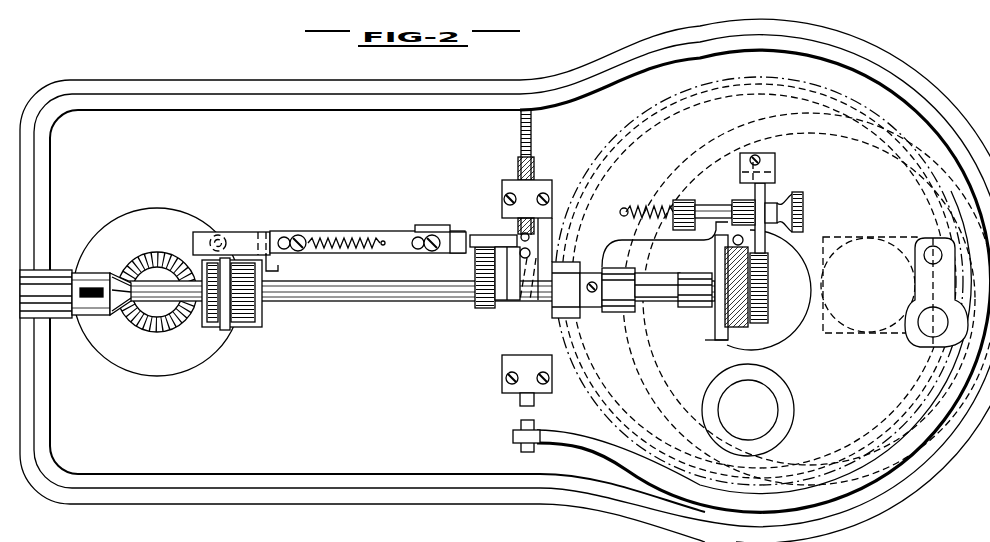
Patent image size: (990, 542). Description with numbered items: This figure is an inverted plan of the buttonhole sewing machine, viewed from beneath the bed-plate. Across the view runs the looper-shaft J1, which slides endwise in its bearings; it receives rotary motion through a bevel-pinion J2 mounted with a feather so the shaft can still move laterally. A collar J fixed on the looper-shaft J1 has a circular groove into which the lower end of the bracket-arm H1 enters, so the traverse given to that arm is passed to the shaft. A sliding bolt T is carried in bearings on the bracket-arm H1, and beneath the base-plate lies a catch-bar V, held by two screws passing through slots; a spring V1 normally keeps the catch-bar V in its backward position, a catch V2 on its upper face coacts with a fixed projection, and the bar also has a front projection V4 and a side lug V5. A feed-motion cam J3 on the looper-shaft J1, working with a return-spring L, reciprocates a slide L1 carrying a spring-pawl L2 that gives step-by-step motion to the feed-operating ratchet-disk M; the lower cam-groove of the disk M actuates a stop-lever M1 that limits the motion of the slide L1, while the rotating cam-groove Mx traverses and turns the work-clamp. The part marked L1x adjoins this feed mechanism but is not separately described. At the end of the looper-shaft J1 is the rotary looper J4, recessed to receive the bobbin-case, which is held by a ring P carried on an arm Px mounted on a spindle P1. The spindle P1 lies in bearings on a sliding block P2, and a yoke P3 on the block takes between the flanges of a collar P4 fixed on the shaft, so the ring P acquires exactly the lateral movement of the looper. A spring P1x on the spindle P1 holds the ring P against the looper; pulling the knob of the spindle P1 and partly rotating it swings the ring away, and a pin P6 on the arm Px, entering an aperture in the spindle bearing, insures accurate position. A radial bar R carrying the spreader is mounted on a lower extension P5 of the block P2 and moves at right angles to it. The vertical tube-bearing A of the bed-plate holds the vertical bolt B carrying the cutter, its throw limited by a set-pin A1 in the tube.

The bevel-pinion J2 is at (115, 274).
The looper-shaft J1 is at (172, 293).
The collar J is at (232, 293).
The bracket-arm H1 is at (226, 322).
The sliding bolt T is at (218, 240).
The catch-bar V is at (333, 255).
The spring V1 is at (350, 240).
The catch V2 is at (265, 240).
The front projection V4 is at (457, 249).
The side lug V5 is at (270, 265).
The feed-motion cam J3 is at (477, 272).
The bracket plate L1x is at (490, 235).
The slide L1 is at (523, 263).
The spring-pawl L2 is at (514, 308).
The return-spring L is at (521, 128).
The feed-operating ratchet-disk M is at (577, 172).
The stop-lever M1 is at (805, 487).
The cam-groove Mx is at (718, 134).
The collar P4 is at (584, 271).
The yoke P3 is at (617, 290).
The lower extension P5 is at (722, 343).
The sliding block P2 is at (698, 269).
The radial bar R is at (722, 343).
The rotary looper J4 is at (736, 292).
The ring P is at (770, 303).
The arm Px is at (763, 247).
The spring P1x is at (638, 209).
The spindle P1 is at (713, 207).
The pin P6 is at (741, 198).
The set-pin A1 is at (773, 173).
The vertical tube-bearing A is at (748, 410).
The vertical bolt B is at (748, 410).